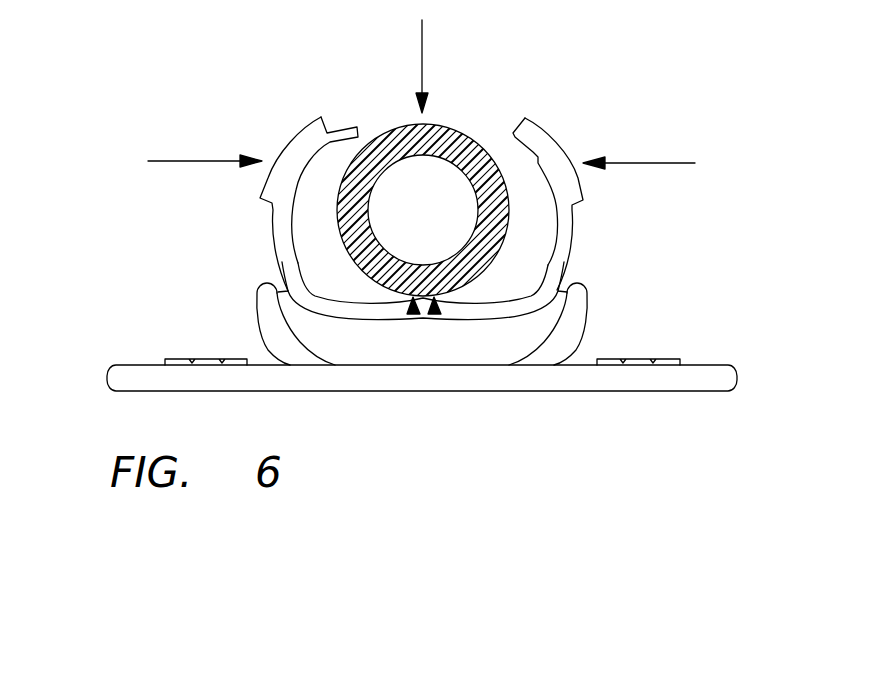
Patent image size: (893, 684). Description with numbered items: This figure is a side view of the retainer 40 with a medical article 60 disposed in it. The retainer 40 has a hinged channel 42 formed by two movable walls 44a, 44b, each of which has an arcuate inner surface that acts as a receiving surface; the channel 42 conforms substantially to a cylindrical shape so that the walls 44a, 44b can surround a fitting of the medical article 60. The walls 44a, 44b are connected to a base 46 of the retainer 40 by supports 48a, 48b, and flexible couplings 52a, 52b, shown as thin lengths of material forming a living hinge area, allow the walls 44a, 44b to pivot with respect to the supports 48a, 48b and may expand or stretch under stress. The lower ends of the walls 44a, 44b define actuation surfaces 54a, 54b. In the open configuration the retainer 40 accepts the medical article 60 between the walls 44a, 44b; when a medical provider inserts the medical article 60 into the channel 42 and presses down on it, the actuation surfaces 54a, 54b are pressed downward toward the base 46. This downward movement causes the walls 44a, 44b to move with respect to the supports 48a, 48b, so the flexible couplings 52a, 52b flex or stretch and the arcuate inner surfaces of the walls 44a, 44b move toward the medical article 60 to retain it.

The retainer 40 is at (230, 56).
The hinged channel 42 is at (507, 150).
The movable wall 44a is at (270, 223).
The movable wall 44b is at (579, 211).
The base 46 is at (706, 368).
The support 48a is at (262, 310).
The support 48b is at (587, 299).
The flexible coupling 52a is at (284, 289).
The flexible coupling 52b is at (566, 290).
The actuation surface 54a is at (412, 316).
The actuation surface 54b is at (433, 316).
The medical article 60 is at (450, 126).